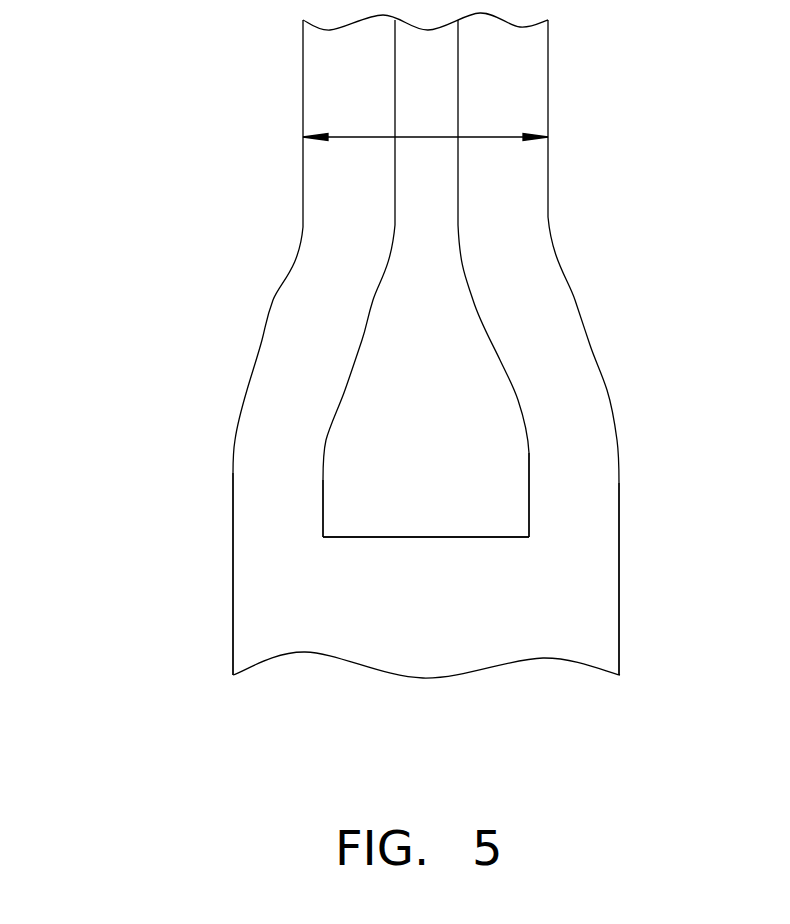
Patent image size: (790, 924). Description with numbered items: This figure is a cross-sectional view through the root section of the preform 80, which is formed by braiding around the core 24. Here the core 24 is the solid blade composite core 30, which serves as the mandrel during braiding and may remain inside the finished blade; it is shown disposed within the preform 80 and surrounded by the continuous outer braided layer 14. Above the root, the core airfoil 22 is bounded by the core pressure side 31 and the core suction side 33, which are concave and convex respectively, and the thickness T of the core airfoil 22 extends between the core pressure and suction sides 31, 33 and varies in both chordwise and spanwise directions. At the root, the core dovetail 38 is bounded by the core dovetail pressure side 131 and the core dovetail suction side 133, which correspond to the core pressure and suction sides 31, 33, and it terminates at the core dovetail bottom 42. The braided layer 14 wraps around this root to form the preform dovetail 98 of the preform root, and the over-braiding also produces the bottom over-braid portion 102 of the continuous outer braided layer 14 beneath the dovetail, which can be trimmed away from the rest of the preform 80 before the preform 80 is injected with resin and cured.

The continuous outer braided layer 14 is at (513, 287).
The core airfoil 22 is at (441, 99).
The core 24 is at (460, 190).
The blade composite core 30 is at (460, 248).
The core pressure side 31 is at (458, 62).
The core suction side 33 is at (395, 62).
The core dovetail 38 is at (437, 412).
The core dovetail bottom 42 is at (427, 537).
The preform 80 is at (158, 672).
The preform dovetail 98 is at (572, 518).
The bottom over-braid portion 102 is at (548, 612).
The core dovetail pressure side 131 is at (529, 487).
The core dovetail suction side 133 is at (323, 496).
The thickness T is at (363, 137).